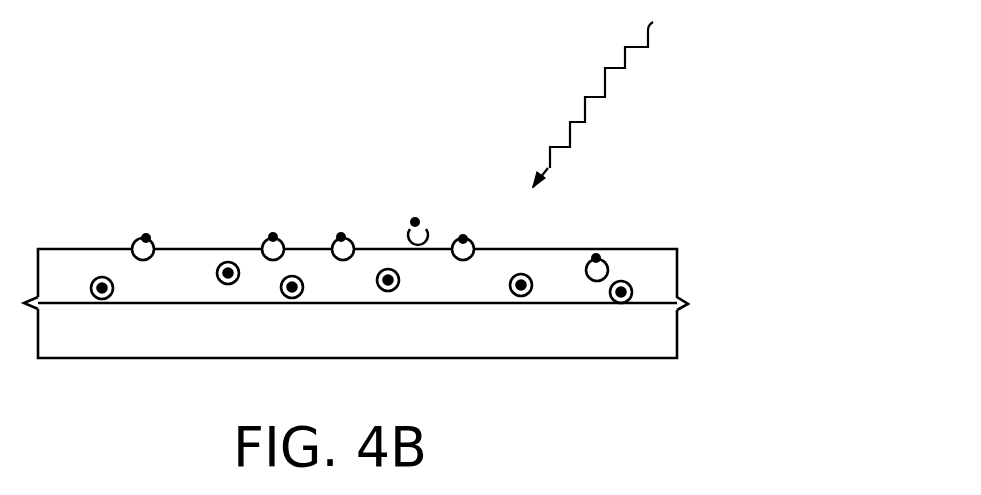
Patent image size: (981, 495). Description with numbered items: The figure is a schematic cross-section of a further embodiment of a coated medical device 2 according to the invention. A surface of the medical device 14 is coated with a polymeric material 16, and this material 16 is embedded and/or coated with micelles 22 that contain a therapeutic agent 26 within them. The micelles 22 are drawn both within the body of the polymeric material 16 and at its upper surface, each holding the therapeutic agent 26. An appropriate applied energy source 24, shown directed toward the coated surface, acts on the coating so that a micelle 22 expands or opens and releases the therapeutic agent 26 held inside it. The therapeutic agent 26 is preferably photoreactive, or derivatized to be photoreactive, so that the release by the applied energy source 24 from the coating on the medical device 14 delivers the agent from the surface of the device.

The device 2 is at (655, 205).
The medical device 14 is at (665, 322).
The polymeric material 16 is at (665, 293).
The micelle 22 is at (412, 218).
The applied energy source 24 is at (598, 98).
The therapeutic agent 26 is at (474, 247).